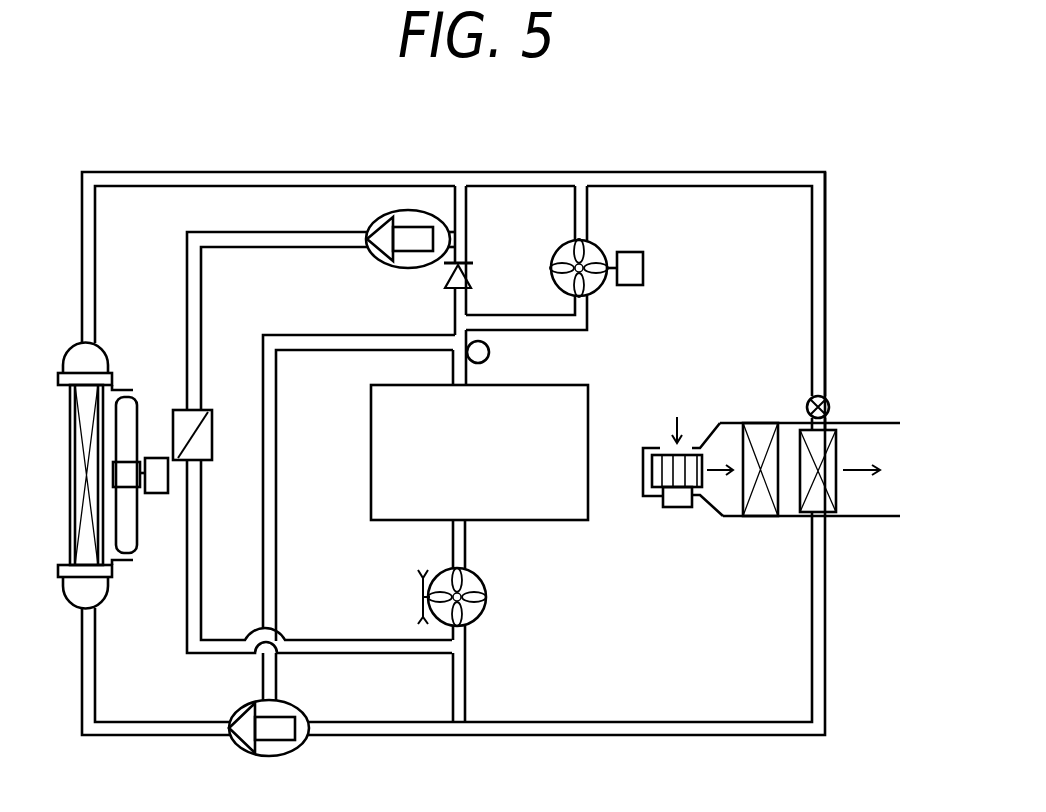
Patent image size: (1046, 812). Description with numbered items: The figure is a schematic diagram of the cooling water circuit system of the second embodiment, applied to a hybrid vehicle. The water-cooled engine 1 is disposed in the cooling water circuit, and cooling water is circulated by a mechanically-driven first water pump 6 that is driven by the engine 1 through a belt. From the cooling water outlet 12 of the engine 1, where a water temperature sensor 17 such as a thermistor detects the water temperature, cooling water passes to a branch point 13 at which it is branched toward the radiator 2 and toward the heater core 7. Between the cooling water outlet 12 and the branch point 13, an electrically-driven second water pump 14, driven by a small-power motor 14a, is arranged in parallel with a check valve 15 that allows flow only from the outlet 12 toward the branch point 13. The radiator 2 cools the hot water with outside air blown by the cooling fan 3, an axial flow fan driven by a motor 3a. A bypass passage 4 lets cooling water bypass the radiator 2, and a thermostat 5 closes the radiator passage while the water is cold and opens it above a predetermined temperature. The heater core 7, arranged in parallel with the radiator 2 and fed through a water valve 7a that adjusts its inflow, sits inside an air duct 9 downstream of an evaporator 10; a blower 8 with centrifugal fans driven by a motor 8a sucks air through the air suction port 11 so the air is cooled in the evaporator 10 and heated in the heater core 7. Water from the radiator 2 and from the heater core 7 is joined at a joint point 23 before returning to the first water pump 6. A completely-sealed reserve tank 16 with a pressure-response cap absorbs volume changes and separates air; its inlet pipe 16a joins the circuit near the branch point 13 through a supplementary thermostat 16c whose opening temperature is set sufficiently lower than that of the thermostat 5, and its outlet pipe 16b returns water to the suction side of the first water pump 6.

The water-cooled engine 1 is at (547, 507).
The radiator 2 is at (70, 475).
The cooling fan 3 is at (137, 425).
The motor 3a is at (157, 494).
The bypass passage 4 is at (317, 334).
The thermostat 5 is at (291, 698).
The first water pump 6 is at (486, 602).
The heater core 7 is at (833, 457).
The water valve 7a is at (807, 405).
The blower 8 is at (663, 465).
The motor 8a is at (680, 508).
The air duct 9 is at (876, 423).
The evaporator 10 is at (760, 504).
The air suction port 11 is at (685, 448).
The cooling water outlet 12 is at (452, 373).
The branch point 13 is at (457, 185).
The second water pump 14 is at (552, 263).
The motor 14a is at (630, 286).
The check valve 15 is at (471, 280).
The reserve tank 16 is at (212, 437).
The inlet pipe 16a is at (238, 231).
The outlet pipe 16b is at (341, 638).
The supplementary thermostat 16c is at (378, 218).
The water temperature sensor 17 is at (487, 360).
The joint point 23 is at (457, 737).